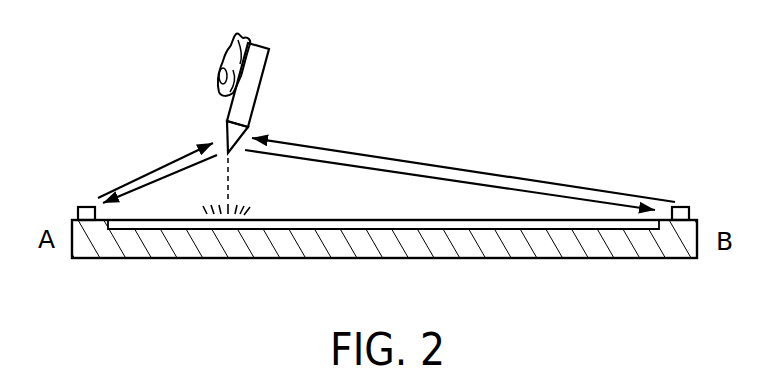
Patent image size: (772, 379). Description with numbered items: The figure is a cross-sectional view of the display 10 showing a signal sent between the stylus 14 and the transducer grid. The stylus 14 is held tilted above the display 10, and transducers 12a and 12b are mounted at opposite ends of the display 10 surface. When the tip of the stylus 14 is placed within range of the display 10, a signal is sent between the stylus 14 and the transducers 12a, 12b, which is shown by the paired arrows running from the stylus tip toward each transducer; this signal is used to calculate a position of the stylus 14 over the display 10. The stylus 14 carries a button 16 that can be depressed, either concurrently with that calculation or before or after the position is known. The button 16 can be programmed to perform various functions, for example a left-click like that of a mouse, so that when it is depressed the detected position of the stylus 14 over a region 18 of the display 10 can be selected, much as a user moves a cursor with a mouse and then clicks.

The display 10 is at (675, 260).
The transducer 12a is at (82, 207).
The transducer 12b is at (677, 207).
The stylus 14 is at (268, 66).
The button 16 is at (221, 105).
The region 18 is at (250, 197).